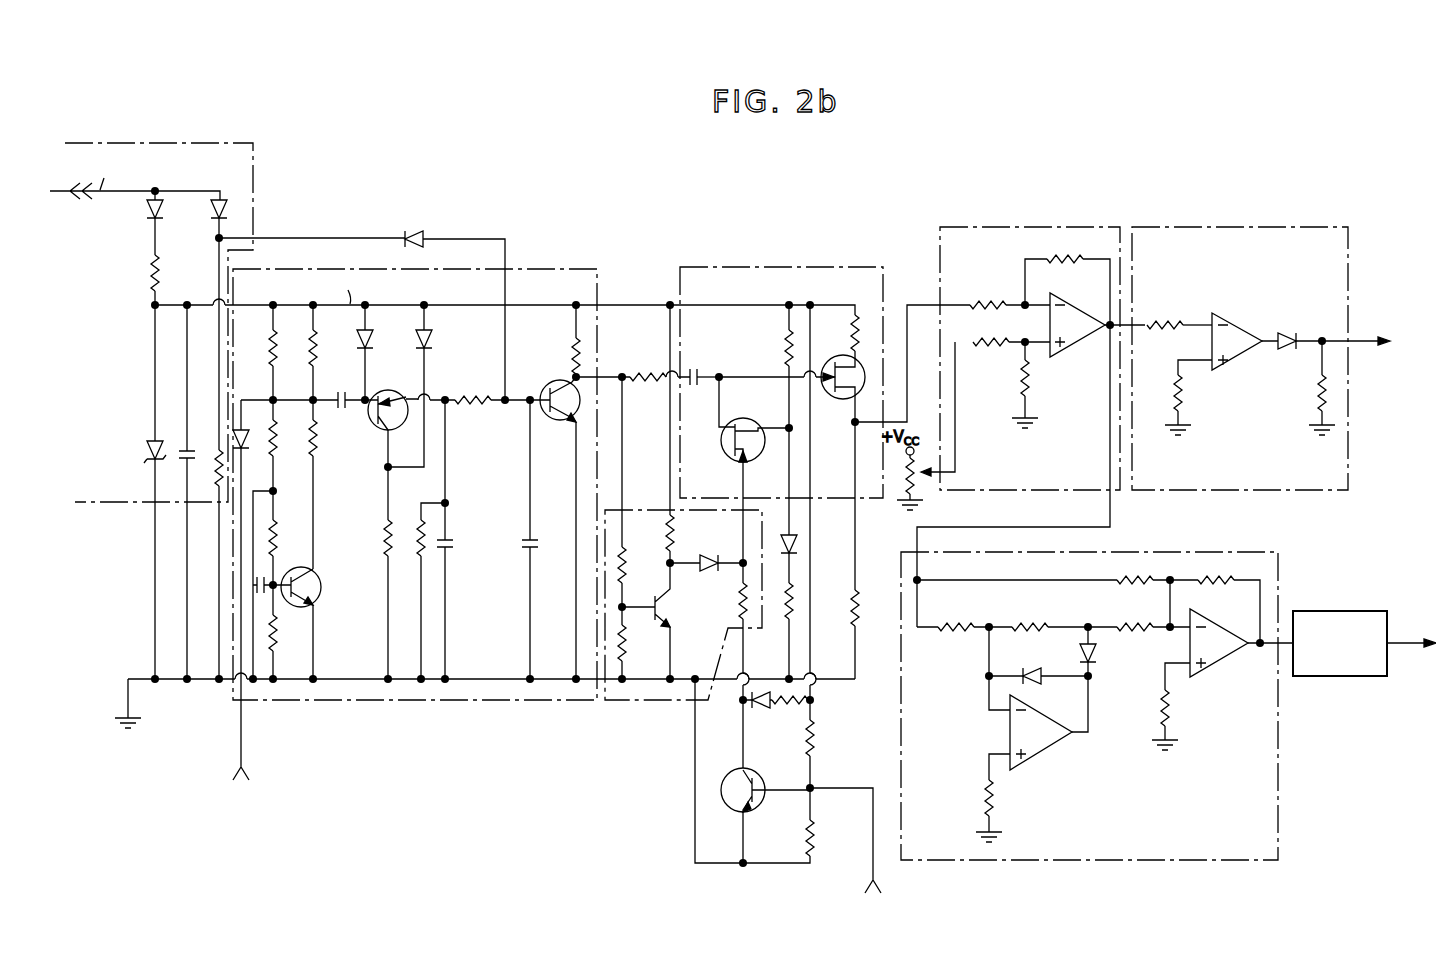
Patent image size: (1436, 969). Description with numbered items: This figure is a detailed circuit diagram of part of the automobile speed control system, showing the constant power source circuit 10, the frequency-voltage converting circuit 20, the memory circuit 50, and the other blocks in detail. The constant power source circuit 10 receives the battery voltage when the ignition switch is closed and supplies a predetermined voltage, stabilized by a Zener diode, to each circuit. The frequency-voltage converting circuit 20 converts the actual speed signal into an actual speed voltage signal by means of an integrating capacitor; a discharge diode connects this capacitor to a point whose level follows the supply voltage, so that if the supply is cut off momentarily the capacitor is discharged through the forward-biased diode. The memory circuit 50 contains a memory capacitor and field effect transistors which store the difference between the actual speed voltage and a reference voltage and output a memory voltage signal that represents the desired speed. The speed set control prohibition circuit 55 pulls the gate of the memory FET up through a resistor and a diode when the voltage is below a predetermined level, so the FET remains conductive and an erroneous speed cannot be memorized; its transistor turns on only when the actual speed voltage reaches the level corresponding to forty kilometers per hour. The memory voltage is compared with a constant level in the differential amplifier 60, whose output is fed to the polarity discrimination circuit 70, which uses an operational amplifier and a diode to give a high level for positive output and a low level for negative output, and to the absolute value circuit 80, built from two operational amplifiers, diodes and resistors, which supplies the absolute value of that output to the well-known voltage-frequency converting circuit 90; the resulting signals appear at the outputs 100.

The constant power source circuit 10 is at (126, 504).
The frequency-voltage converting circuit 20 is at (579, 268).
The memory circuit 50 is at (746, 267).
The speed set control prohibition circuit 55 is at (612, 702).
The differential amplifier 60 is at (1020, 226).
The polarity discrimination circuit 70 is at (1190, 226).
The absolute value circuit 80 is at (1010, 862).
The voltage-frequency converting circuit 90 is at (1325, 678).
The output terminal 100 is at (1411, 503).